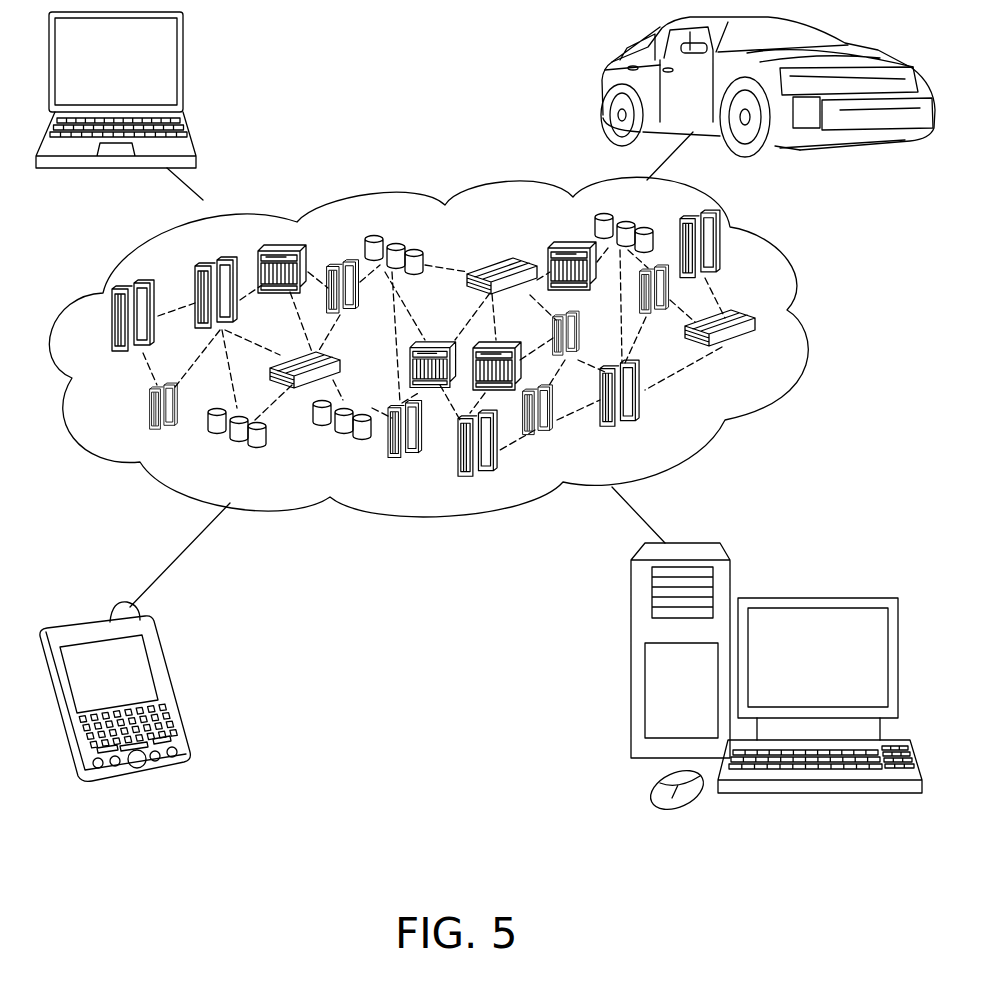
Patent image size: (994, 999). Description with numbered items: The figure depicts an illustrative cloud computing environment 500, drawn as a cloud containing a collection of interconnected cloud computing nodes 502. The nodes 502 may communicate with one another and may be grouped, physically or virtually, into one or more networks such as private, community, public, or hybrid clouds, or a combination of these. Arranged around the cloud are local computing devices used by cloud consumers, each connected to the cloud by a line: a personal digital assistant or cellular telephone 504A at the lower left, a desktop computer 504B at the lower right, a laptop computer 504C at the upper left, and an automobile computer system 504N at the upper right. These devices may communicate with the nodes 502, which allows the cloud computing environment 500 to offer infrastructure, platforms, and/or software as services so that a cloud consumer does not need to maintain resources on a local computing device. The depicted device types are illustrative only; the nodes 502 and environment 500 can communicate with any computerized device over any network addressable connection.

The cloud computing environment 500 is at (797, 312).
The cloud computing nodes 502 is at (757, 351).
The personal digital assistant (PDA) or cellular telephone 504A is at (163, 653).
The desktop computer 504B is at (803, 597).
The laptop computer 504C is at (183, 48).
The automobile computer system 504N is at (605, 88).